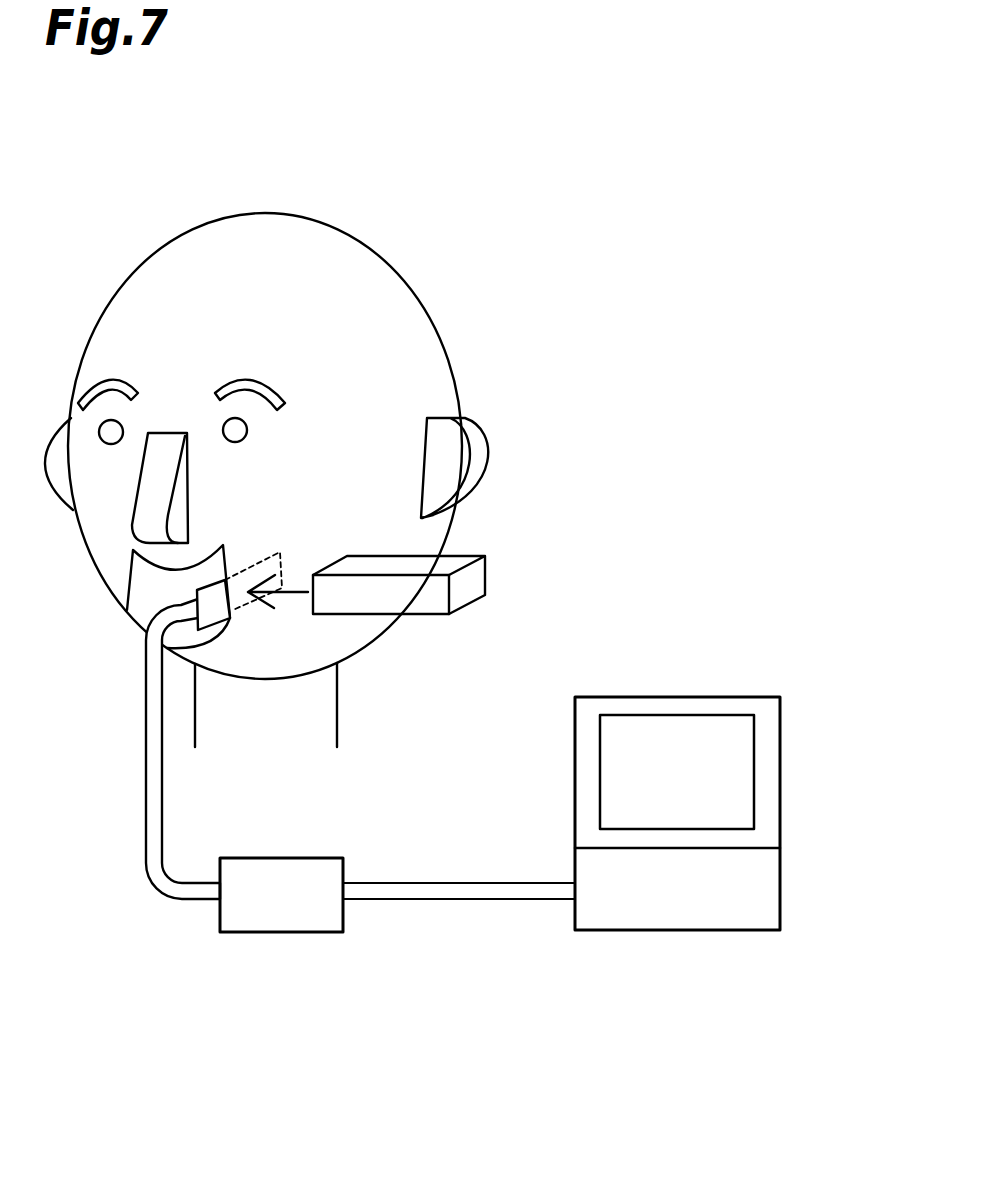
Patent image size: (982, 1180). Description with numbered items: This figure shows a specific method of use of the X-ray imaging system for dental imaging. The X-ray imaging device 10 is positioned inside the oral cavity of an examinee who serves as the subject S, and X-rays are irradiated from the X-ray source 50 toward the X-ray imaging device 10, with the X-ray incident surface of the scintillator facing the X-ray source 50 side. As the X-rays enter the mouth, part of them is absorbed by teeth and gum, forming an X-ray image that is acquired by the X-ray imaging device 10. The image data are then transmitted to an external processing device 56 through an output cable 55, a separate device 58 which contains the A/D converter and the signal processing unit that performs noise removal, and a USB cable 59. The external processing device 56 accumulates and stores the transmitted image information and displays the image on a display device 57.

The subject S is at (382, 290).
The X-ray imaging device 10 is at (247, 605).
The X-ray source 50 is at (460, 560).
The output cable 55 is at (163, 890).
The external processing device 56 is at (780, 883).
The display device 57 is at (780, 765).
The device 58 is at (280, 932).
The USB cable 59 is at (448, 900).